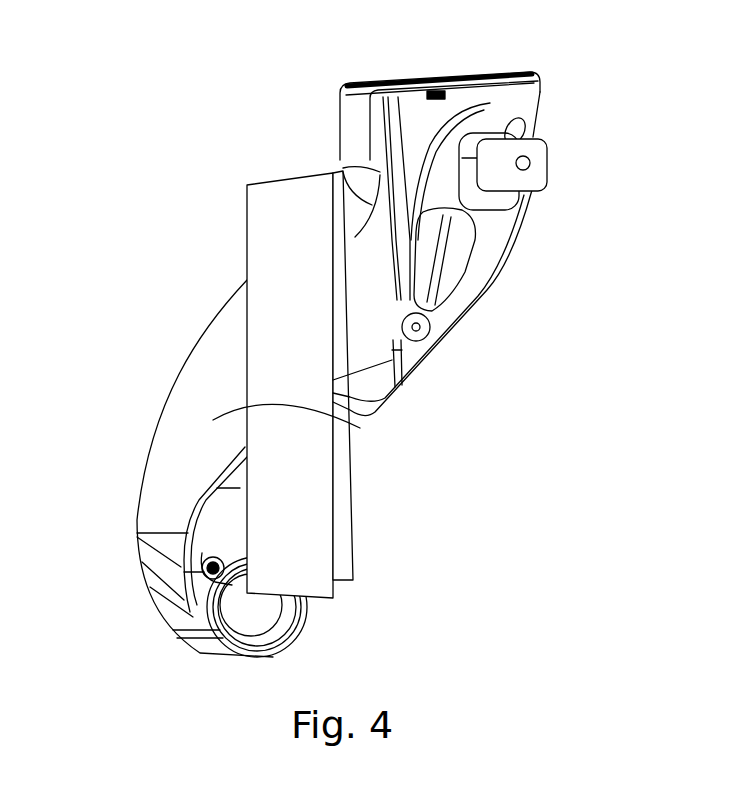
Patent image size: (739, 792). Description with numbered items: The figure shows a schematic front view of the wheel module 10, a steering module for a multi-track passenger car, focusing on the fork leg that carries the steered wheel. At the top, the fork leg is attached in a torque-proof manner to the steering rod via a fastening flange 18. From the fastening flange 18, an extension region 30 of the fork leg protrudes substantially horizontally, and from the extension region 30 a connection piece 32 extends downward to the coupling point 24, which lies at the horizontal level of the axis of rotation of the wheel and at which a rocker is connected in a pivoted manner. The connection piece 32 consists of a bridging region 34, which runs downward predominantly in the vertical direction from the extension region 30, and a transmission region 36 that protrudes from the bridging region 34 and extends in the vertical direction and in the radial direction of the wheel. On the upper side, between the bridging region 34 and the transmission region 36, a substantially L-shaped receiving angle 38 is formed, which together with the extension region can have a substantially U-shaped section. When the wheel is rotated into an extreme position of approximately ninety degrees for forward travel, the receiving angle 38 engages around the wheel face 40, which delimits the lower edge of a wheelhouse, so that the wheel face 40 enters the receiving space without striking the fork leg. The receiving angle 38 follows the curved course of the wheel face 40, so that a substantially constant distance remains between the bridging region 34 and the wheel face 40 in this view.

The wheel module 10 is at (120, 147).
The fastening flange 18 is at (467, 72).
The coupling point 24 is at (270, 607).
The extension region 30 is at (410, 120).
The connection piece 32 is at (575, 292).
The bridging region 34 is at (378, 231).
The transmission region 36 is at (350, 428).
The receiving angle 38 is at (337, 168).
The wheel face 40 is at (273, 210).